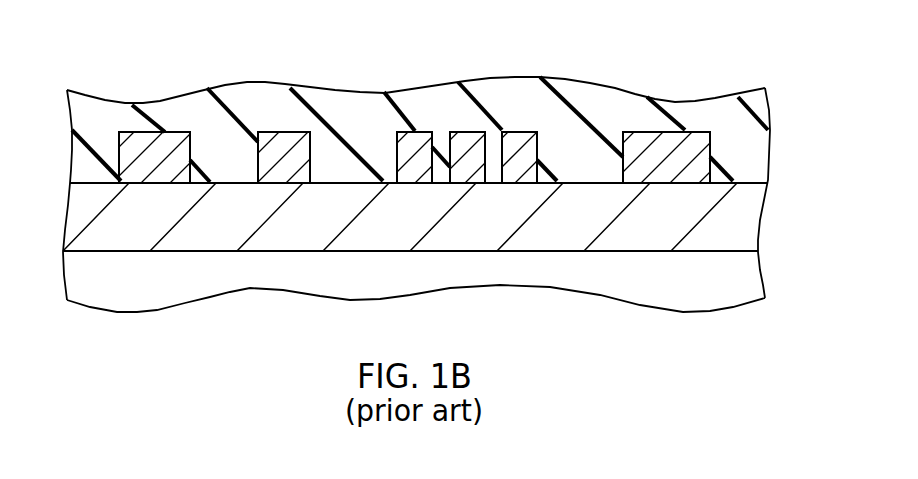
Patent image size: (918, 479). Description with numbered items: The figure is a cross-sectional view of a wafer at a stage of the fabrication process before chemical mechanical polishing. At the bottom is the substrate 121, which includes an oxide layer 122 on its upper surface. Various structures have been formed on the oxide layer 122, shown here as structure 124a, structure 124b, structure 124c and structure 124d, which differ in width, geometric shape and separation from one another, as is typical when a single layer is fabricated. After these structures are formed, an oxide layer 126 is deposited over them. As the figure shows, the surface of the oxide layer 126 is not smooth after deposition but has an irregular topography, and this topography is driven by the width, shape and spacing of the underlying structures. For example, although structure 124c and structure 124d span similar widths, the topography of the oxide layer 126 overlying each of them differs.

The substrate 121 is at (755, 280).
The oxide layer 122 is at (755, 220).
The structure 124a is at (168, 131).
The structure 124b is at (287, 131).
The structure 124c is at (518, 131).
The structure 124d is at (667, 131).
The oxide layer 126 is at (717, 120).